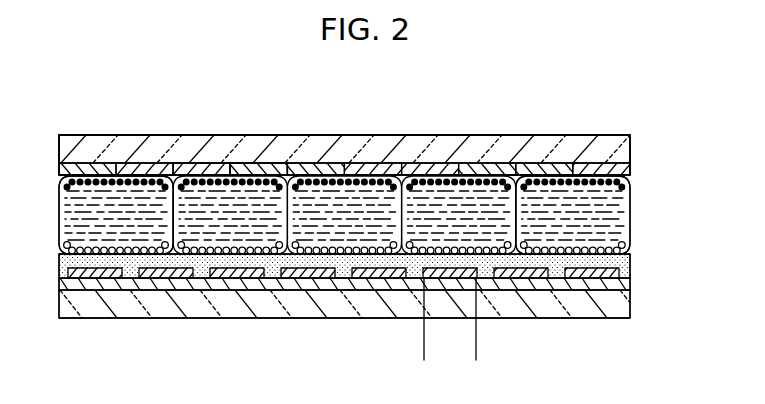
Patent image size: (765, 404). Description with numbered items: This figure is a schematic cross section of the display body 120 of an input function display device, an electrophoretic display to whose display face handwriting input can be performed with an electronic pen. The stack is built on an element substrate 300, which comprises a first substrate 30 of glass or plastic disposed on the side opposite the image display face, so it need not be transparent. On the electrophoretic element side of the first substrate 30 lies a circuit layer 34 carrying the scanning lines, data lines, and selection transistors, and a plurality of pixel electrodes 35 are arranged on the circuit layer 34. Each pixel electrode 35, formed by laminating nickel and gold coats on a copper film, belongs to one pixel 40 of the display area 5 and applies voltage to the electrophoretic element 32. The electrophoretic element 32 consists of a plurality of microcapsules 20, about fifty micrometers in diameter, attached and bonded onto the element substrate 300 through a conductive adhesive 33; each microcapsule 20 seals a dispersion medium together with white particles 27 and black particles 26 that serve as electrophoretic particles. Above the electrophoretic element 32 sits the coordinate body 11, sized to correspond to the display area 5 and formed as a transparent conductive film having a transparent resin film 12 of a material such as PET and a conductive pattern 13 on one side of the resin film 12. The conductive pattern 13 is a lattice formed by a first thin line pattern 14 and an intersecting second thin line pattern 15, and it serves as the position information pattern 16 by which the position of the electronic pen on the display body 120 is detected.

The display body 120 is at (592, 104).
The display area 5 is at (505, 122).
The coordinate body 11 is at (694, 117).
The transparent resin film 12 is at (623, 153).
The position information pattern 16 is at (622, 170).
The conductive pattern 13 is at (195, 94).
The first thin line pattern 14 is at (205, 170).
The second thin line pattern 15 is at (262, 170).
The electrophoretic element 32 is at (53, 175).
The microcapsule 20 is at (646, 221).
The black particles 26 is at (623, 186).
The white particles 27 is at (623, 247).
The element substrate 300 is at (694, 263).
The conductive adhesive 33 is at (627, 272).
The pixel electrode 35 is at (67, 275).
The circuit layer 34 is at (628, 286).
The first substrate 30 is at (628, 305).
The pixel 40 is at (476, 347).